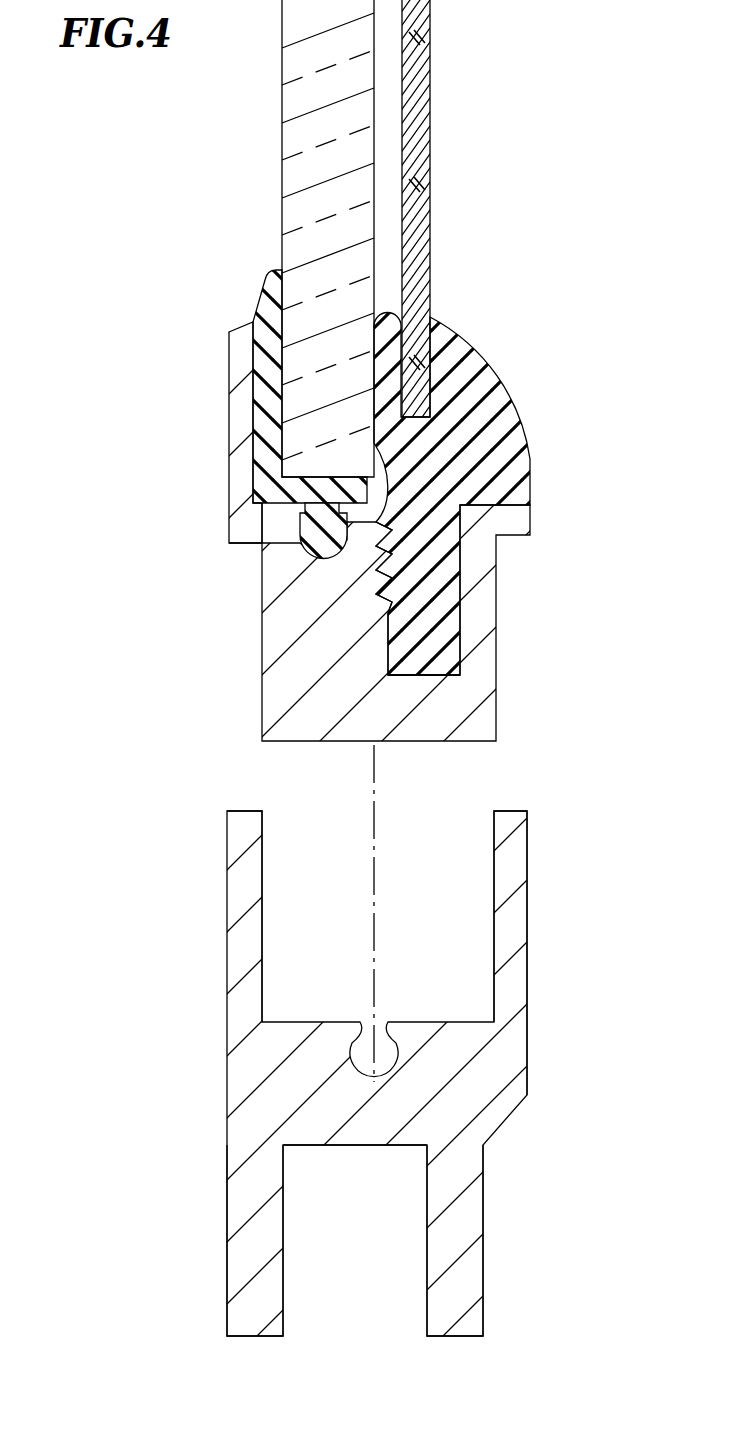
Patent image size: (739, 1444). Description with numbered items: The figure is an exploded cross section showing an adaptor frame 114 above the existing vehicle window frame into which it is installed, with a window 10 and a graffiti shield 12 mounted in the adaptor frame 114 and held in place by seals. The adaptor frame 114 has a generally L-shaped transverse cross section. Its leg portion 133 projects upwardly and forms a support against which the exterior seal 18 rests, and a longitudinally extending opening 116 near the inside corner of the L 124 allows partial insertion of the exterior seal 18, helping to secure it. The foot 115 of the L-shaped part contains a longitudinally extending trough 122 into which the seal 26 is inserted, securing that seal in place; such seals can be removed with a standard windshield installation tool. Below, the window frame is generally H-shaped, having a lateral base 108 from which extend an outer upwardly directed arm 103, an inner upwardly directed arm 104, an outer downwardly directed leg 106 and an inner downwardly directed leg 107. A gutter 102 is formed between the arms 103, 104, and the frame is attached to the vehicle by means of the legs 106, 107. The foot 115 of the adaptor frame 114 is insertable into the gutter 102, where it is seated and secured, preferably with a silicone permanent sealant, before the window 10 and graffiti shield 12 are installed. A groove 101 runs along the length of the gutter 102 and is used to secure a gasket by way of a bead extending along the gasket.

The window 10 is at (325, 145).
The graffiti shield 12 is at (422, 138).
The exterior seal 18 is at (262, 315).
The seal 26 is at (467, 397).
The leg portion 133 is at (243, 438).
The inside corner of the L 124 is at (258, 544).
The longitudinally extending opening 116 is at (325, 560).
The foot 115 is at (278, 650).
The adaptor frame 114 is at (380, 511).
The longitudinally extending trough 122 is at (440, 675).
The gutter 102 is at (381, 1047).
The groove 101 is at (388, 1065).
The outer upwardly directed arm 103 is at (250, 884).
The inner upwardly directed arm 104 is at (514, 944).
The lateral base 108 is at (360, 1102).
The outer downwardly directed leg 106 is at (252, 1280).
The inner downwardly directed leg 107 is at (463, 1272).